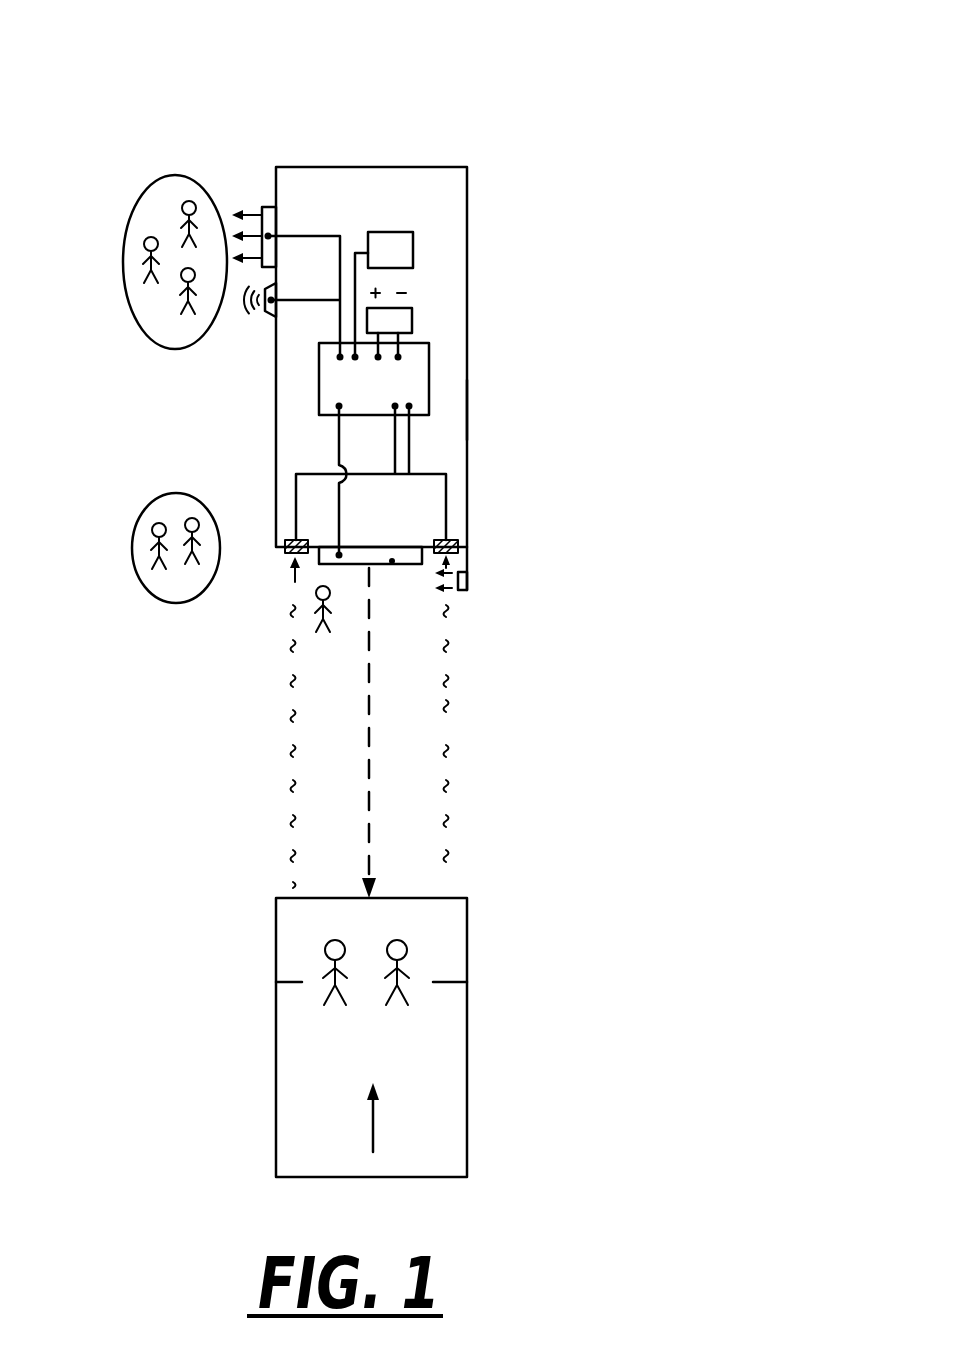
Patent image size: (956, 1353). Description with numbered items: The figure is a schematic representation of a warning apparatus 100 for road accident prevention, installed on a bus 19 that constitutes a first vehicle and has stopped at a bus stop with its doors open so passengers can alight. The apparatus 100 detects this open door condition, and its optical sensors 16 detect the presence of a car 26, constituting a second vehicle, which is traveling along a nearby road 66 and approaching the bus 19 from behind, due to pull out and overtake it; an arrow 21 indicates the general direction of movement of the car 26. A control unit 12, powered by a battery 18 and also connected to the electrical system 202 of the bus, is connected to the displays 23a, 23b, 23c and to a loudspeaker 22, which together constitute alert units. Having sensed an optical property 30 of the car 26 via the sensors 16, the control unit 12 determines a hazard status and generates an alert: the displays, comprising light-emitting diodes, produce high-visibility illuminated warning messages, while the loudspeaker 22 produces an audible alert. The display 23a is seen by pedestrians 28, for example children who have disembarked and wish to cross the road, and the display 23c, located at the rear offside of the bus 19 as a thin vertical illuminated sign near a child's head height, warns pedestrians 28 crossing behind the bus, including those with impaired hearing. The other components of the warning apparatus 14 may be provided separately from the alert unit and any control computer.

The warning apparatus 100 is at (497, 82).
The warning apparatus 14 is at (442, 224).
The bus 19 is at (467, 413).
The road 66 is at (611, 478).
The electrical system 202 is at (380, 242).
The battery 18 is at (405, 322).
The control unit 12 is at (410, 378).
The display 23a is at (262, 208).
The loudspeaker 22 is at (273, 316).
The optical sensors 16 is at (290, 556).
The display 23b is at (392, 563).
The display 23c is at (467, 580).
The optical property 30 is at (452, 707).
The pedestrians 28 is at (155, 186).
The car 26 is at (467, 1045).
The arrow 21 is at (373, 1130).